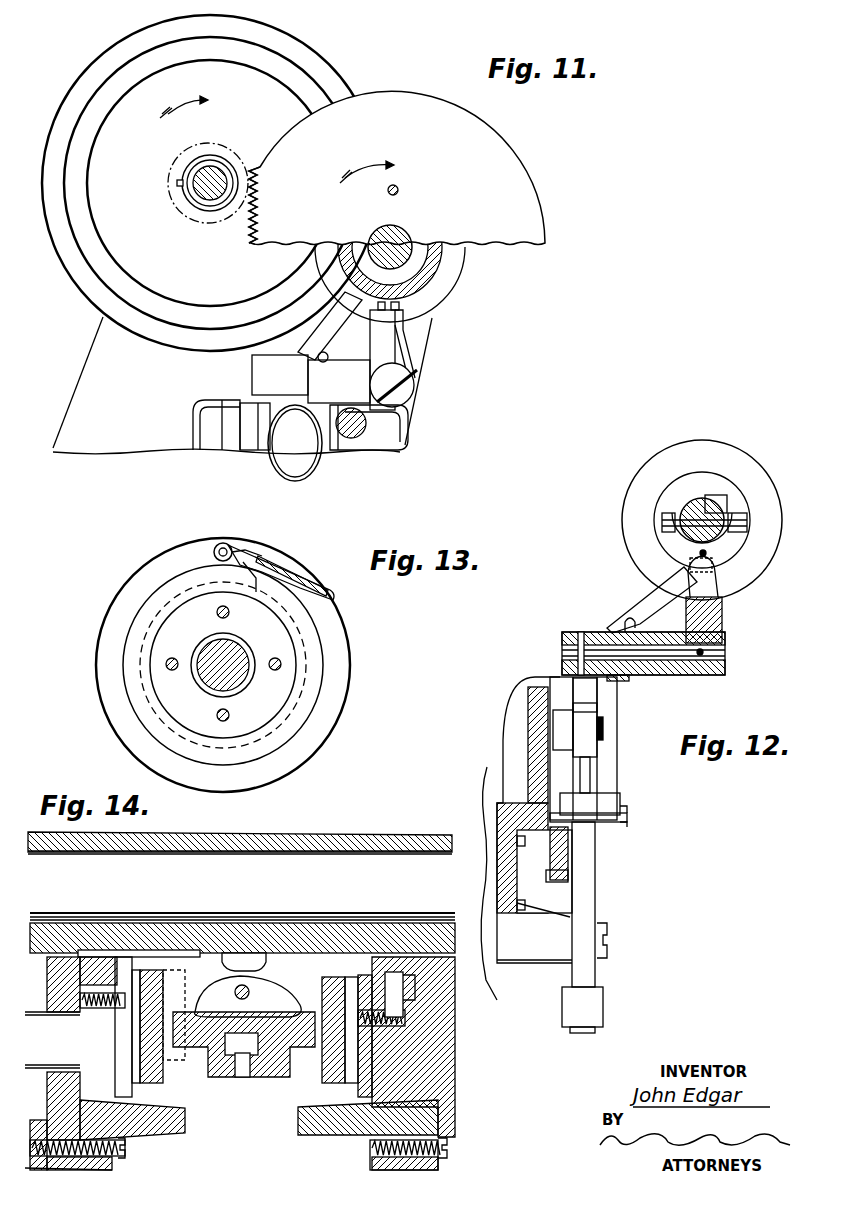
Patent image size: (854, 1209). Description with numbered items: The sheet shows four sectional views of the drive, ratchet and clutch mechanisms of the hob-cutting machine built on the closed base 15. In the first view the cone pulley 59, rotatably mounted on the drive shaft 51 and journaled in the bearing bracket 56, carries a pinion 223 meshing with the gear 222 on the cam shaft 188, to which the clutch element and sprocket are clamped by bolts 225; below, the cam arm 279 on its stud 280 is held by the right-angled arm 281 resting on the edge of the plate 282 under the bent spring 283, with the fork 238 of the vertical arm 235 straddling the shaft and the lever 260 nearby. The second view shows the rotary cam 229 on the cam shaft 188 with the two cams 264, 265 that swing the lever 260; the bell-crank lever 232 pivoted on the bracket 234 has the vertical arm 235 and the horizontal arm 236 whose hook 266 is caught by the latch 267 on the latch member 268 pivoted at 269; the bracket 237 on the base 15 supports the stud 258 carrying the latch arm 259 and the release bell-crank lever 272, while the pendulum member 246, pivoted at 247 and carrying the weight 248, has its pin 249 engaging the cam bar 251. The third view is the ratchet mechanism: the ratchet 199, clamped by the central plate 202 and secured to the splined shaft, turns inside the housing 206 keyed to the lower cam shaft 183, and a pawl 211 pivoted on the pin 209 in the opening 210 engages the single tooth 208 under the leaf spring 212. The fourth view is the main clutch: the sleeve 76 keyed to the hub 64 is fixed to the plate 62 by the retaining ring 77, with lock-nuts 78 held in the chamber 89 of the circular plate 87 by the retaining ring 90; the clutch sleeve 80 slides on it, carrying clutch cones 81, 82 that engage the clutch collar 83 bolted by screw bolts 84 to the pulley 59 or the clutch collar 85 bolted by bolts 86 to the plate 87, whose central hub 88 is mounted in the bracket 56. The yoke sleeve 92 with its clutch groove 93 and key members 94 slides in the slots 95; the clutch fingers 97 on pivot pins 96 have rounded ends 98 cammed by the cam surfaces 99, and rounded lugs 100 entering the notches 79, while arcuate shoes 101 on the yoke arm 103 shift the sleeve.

In FIG. 12, the closed base 15 is at (487, 767).
In FIG. 11, the drive shaft 51 is at (200, 175).
In FIG. 14, the drive shaft 51 is at (355, 860).
In FIG. 11, the bearing bracket 56 is at (100, 352).
In FIG. 11, the cone pulley 59 is at (325, 70).
In FIG. 14, the cone pulley 59 is at (80, 1170).
In FIG. 14, the plate 62 is at (62, 1078).
In FIG. 14, the hub 64 is at (338, 845).
In FIG. 14, the sleeve 76 is at (385, 960).
In FIG. 14, the retaining ring 77 is at (112, 990).
In FIG. 14, the lock-nuts 78 is at (420, 960).
In FIG. 14, the notches 79 is at (265, 940).
In FIG. 14, the clutch sleeve 80 is at (350, 990).
In FIG. 14, the clutch cone 81 is at (140, 975).
In FIG. 14, the clutch cone 82 is at (365, 990).
In FIG. 14, the clutch collar 83 is at (178, 1133).
In FIG. 14, the screw bolts 84 is at (125, 1146).
In FIG. 14, the clutch collar 85 is at (315, 1135).
In FIG. 14, the bolts 86 is at (447, 1155).
In FIG. 14, the circular plate 87 is at (440, 1122).
In FIG. 14, the central hub 88 is at (438, 1030).
In FIG. 14, the chamber 89 is at (415, 995).
In FIG. 14, the retaining ring 90 is at (358, 1125).
In FIG. 14, the yoke sleeve 92 is at (200, 1045).
In FIG. 14, the clutch groove 93 is at (222, 1075).
In FIG. 14, the key members 94 is at (296, 1045).
In FIG. 14, the slots 95 is at (150, 975).
In FIG. 14, the pivot pins 96 is at (248, 975).
In FIG. 14, the clutch fingers 97 is at (325, 990).
In FIG. 14, the rounded ends 98 is at (303, 1025).
In FIG. 14, the cam surfaces 99 is at (175, 970).
In FIG. 14, the rounded lugs 100 is at (240, 975).
In FIG. 14, the arcuate shoes 101 is at (242, 1048).
In FIG. 14, the arm 103 is at (258, 1075).
In FIG. 11, the lower cam shaft 183 is at (368, 424).
In FIG. 13, the lower cam shaft 183 is at (238, 676).
In FIG. 11, the cam shaft 188 is at (413, 235).
In FIG. 12, the cam shaft 188 is at (700, 512).
In FIG. 13, the ratchet 199 is at (310, 630).
In FIG. 13, the central plate 202 is at (318, 665).
In FIG. 13, the housing 206 is at (330, 732).
In FIG. 13, the tooth 208 is at (253, 592).
In FIG. 13, the pin 209 is at (225, 542).
In FIG. 13, the opening 210 is at (282, 560).
In FIG. 13, the pawl 211 is at (240, 548).
In FIG. 13, the leaf spring 212 is at (308, 582).
In FIG. 11, the gear 222 is at (423, 92).
In FIG. 11, the pinion 223 is at (250, 160).
In FIG. 11, the bolts 225 is at (388, 193).
In FIG. 12, the rotary cam 229 is at (705, 446).
In FIG. 12, the bell-crank lever 232 is at (725, 652).
In FIG. 12, the bracket 234 is at (652, 676).
In FIG. 11, the vertical arm 235 is at (420, 315).
In FIG. 12, the vertical arm 235 is at (722, 632).
In FIG. 12, the horizontal arm 236 is at (578, 632).
In FIG. 12, the bracket 237 is at (530, 720).
In FIG. 12, the fork 238 is at (728, 560).
In FIG. 12, the pendulum member 246 is at (590, 898).
In FIG. 12, the pivot 247 is at (607, 935).
In FIG. 12, the weight 248 is at (585, 980).
In FIG. 12, the pin 249 is at (570, 876).
In FIG. 12, the cam bar 251 is at (568, 853).
In FIG. 12, the stud 258 is at (627, 810).
In FIG. 12, the latch arm 259 is at (590, 775).
In FIG. 11, the lever 260 is at (328, 330).
In FIG. 12, the lever 260 is at (640, 608).
In FIG. 12, the cam 264 is at (727, 500).
In FIG. 12, the cam 265 is at (695, 552).
In FIG. 12, the hook 266 is at (565, 690).
In FIG. 12, the latch 267 is at (600, 695).
In FIG. 12, the latch member 268 is at (590, 748).
In FIG. 12, the pivot 269 is at (605, 726).
In FIG. 12, the bell-crank lever 272 is at (560, 800).
In FIG. 11, the cam arm 279 is at (410, 372).
In FIG. 11, the stud 280 is at (415, 388).
In FIG. 11, the arm 281 is at (320, 382).
In FIG. 11, the plate 282 is at (340, 460).
In FIG. 11, the bent spring 283 is at (268, 445).